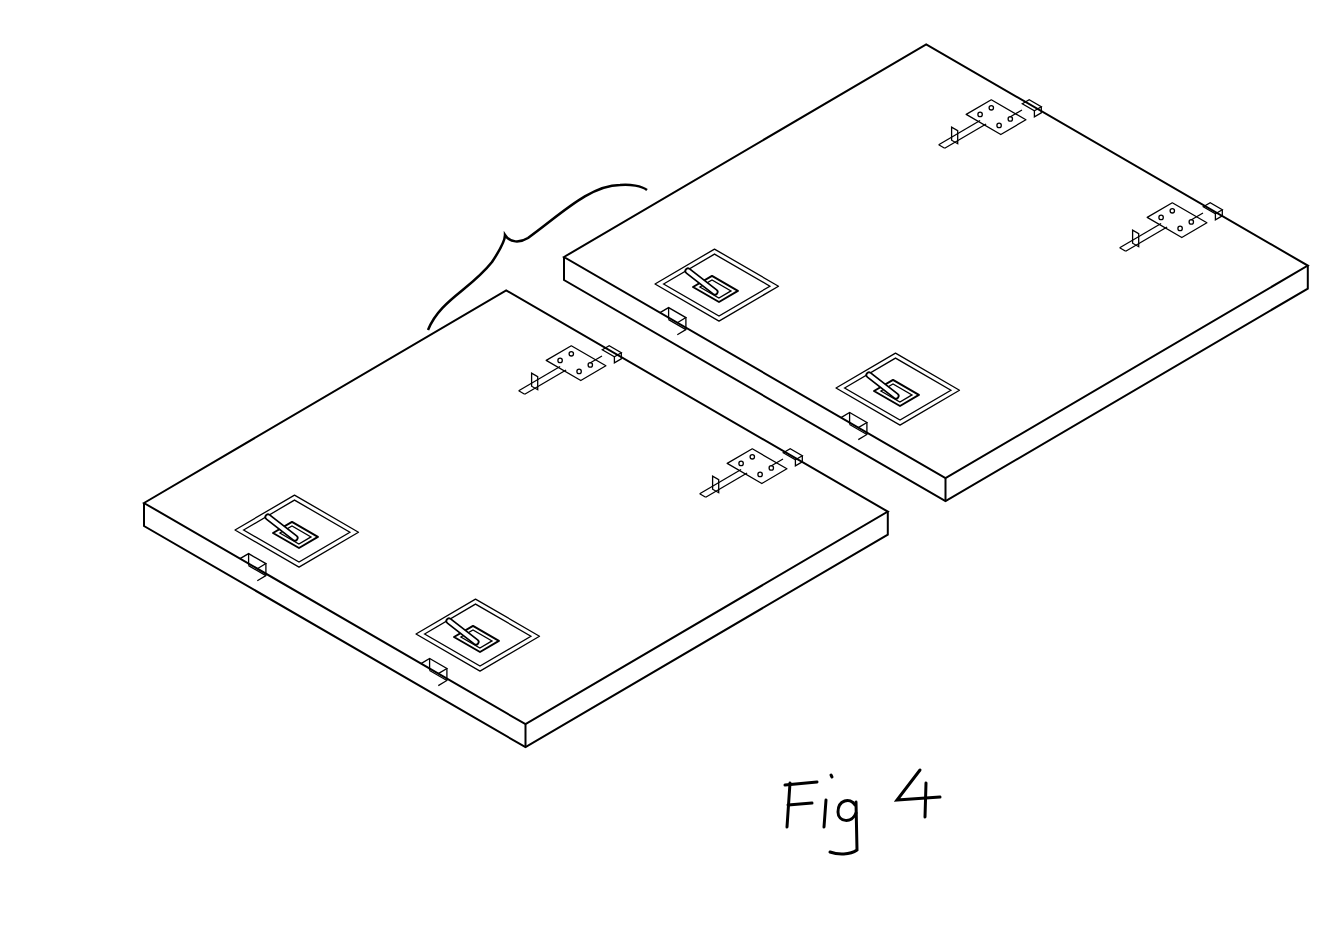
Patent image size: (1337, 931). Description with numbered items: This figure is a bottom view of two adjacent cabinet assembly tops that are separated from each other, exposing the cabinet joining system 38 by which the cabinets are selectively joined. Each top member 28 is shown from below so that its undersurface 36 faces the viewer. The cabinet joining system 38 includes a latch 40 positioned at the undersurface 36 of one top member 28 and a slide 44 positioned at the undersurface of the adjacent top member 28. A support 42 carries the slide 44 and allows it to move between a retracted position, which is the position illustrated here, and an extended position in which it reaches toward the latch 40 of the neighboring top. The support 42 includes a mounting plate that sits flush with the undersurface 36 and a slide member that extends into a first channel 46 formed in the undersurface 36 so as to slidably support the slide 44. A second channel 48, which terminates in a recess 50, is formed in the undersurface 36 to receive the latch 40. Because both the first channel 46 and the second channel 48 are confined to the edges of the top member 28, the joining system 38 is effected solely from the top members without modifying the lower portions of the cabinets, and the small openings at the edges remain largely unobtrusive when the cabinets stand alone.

The top member 28 is at (785, 127).
The undersurface 36 is at (990, 278).
The cabinet joining system 38 is at (537, 257).
The latch 40 is at (717, 270).
The support 42 is at (555, 353).
The slide 44 is at (532, 380).
The first channel 46 is at (596, 345).
The second channel 48 is at (682, 300).
The recess 50 is at (740, 275).